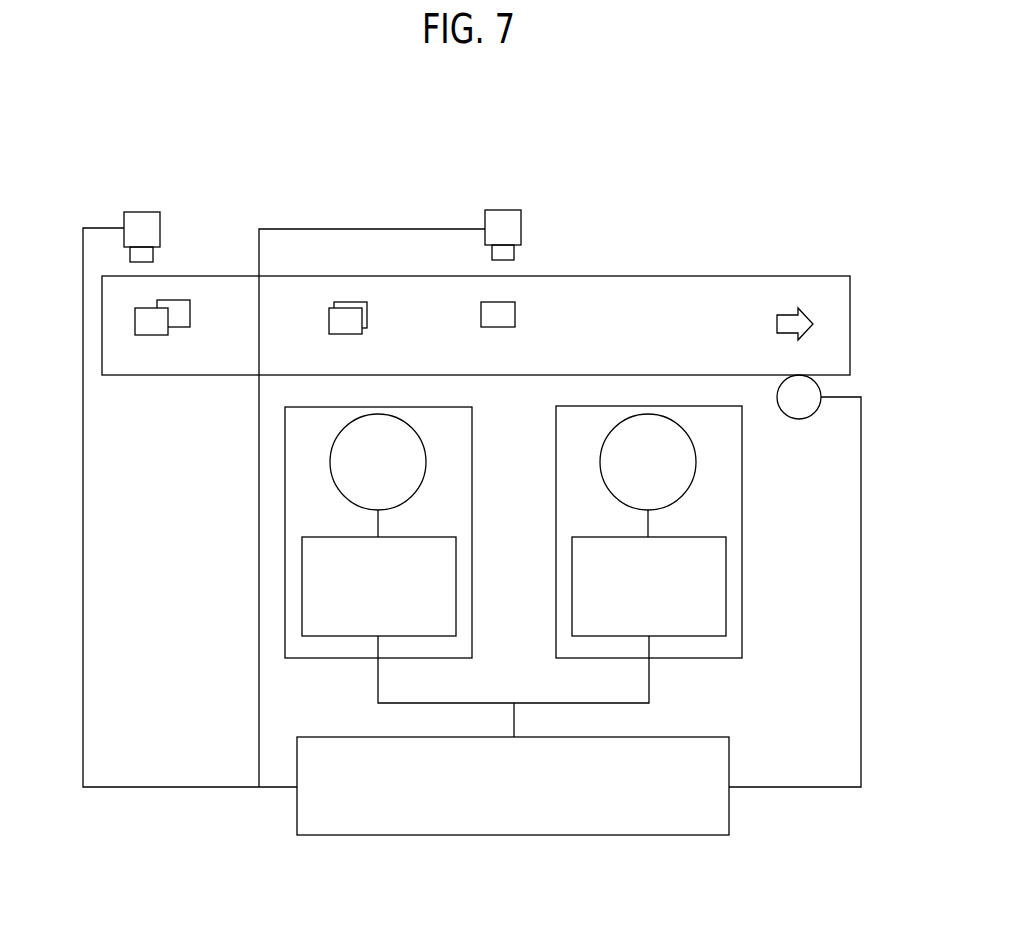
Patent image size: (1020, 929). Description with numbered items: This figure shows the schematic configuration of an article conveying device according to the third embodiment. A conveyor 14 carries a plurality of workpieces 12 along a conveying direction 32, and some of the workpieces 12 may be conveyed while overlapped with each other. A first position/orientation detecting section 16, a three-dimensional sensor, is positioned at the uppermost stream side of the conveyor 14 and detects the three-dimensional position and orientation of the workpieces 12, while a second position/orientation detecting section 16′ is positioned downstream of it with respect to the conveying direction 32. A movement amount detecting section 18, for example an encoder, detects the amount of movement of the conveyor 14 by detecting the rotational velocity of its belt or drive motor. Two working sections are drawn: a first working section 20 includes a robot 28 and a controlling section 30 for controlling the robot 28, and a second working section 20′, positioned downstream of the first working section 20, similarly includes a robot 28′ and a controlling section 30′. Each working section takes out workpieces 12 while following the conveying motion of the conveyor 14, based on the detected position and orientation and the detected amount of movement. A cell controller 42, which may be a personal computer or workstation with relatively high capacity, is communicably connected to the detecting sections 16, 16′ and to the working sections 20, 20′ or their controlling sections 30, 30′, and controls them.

The workpiece 12 is at (145, 308).
The conveyor 14 is at (665, 275).
The first position/orientation detecting section 16 is at (160, 220).
The second position/orientation detecting section 16′ is at (521, 220).
The movement amount detecting section 18 is at (822, 384).
The first working section 20 is at (413, 534).
The second working section 20′ is at (688, 532).
The robot 28 is at (427, 462).
The robot 28′ is at (697, 462).
The controlling section 30 is at (456, 578).
The controlling section 30′ is at (726, 578).
The conveying direction 32 is at (788, 312).
The cell controller 42 is at (687, 837).